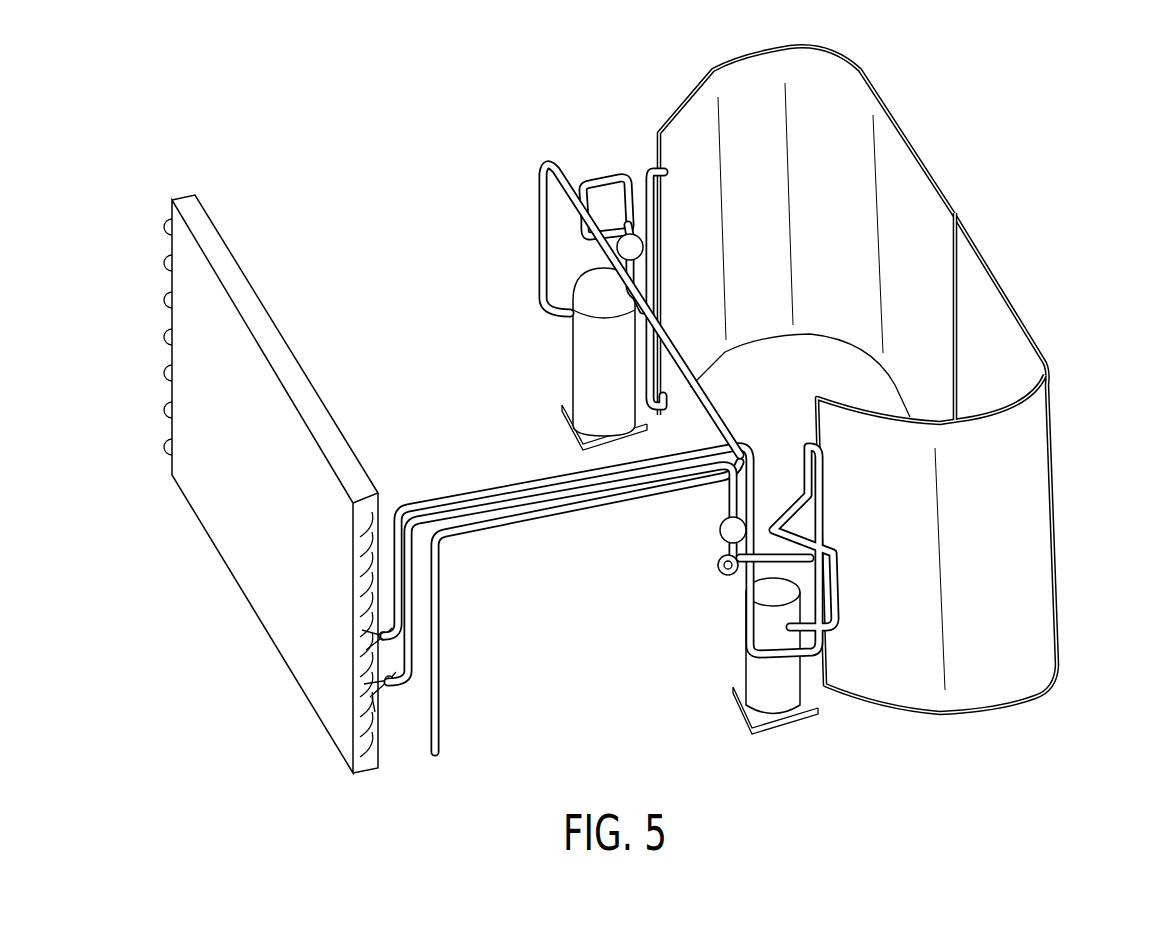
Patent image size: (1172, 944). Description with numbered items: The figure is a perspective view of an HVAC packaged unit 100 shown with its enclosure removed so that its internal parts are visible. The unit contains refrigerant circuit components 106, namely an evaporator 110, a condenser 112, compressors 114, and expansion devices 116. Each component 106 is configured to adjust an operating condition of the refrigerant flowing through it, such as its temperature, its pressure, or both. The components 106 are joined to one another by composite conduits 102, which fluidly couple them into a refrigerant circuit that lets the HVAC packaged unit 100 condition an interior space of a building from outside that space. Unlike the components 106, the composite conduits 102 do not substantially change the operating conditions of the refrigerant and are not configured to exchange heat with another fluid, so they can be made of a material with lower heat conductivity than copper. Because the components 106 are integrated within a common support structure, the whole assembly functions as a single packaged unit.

The HVAC packaged unit 100 is at (1058, 97).
The composite conduits 102 is at (705, 407).
The components 106 is at (648, 409).
The evaporator 110 is at (252, 277).
The condenser 112 is at (1002, 280).
The compressors 114 is at (563, 363).
The expansion devices 116 is at (377, 612).